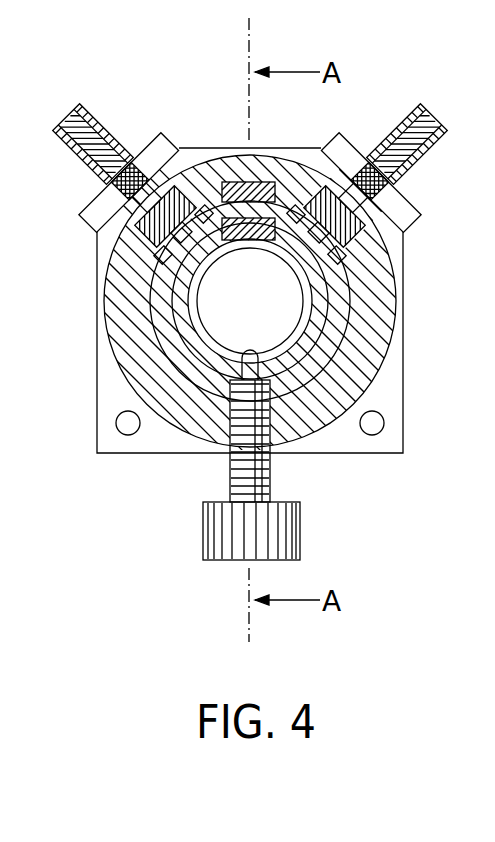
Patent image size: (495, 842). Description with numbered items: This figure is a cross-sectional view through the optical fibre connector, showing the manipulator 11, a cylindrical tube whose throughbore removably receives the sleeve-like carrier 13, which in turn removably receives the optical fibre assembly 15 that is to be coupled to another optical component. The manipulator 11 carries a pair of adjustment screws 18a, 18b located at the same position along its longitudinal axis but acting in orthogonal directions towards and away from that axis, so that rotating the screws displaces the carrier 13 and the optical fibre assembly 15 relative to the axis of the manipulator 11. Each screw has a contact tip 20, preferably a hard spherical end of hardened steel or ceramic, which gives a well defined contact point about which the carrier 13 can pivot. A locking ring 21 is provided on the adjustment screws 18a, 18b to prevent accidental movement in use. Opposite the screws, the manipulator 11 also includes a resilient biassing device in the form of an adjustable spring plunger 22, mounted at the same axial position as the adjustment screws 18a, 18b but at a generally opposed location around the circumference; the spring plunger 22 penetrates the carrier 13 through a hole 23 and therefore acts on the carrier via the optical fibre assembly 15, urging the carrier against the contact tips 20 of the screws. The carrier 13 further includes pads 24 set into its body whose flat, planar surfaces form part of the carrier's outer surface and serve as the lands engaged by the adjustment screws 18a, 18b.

The manipulator 11 is at (133, 363).
The carrier 13 is at (210, 355).
The optical fibre assembly 15 is at (287, 292).
The adjustment screw 18a is at (73, 112).
The adjustment screw 18b is at (422, 108).
The contact tip 20 is at (130, 217).
The locking ring 21 is at (150, 157).
The spring plunger 22 is at (212, 530).
The hole 23 is at (266, 372).
The pad 24 is at (198, 190).